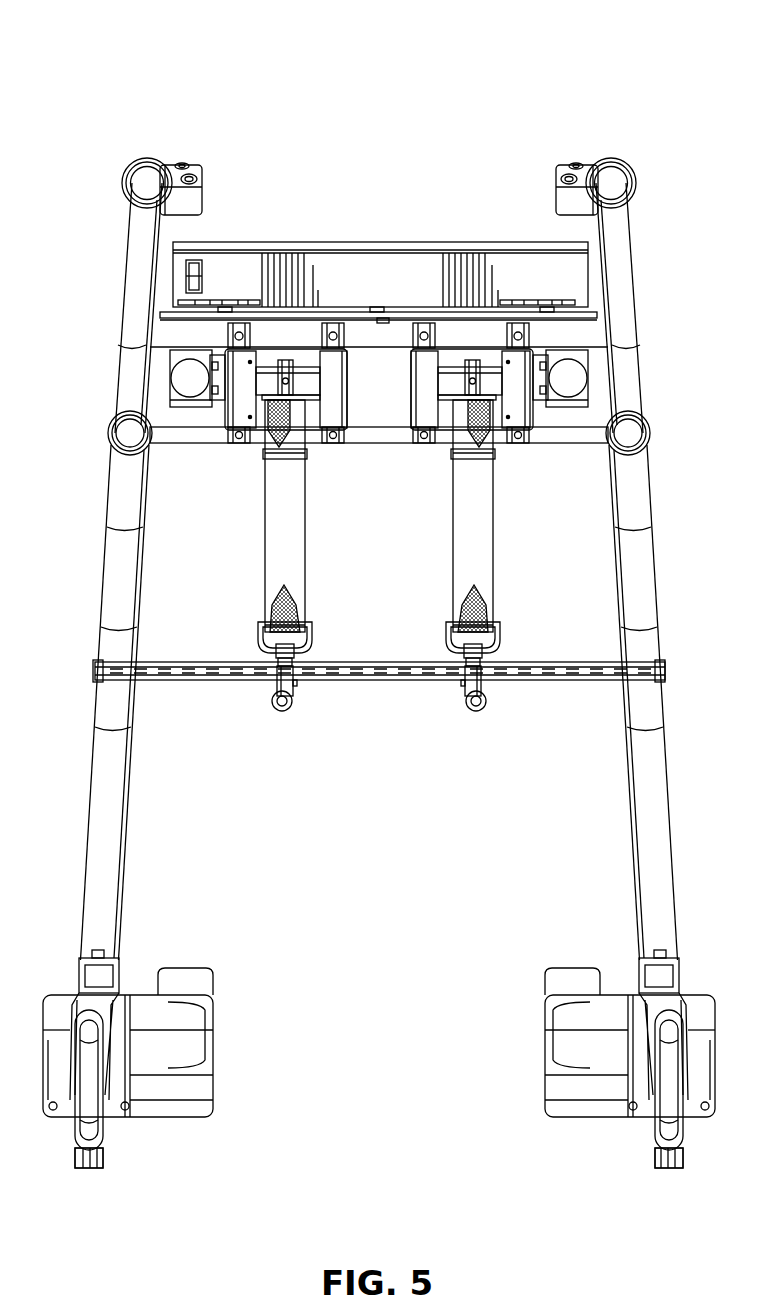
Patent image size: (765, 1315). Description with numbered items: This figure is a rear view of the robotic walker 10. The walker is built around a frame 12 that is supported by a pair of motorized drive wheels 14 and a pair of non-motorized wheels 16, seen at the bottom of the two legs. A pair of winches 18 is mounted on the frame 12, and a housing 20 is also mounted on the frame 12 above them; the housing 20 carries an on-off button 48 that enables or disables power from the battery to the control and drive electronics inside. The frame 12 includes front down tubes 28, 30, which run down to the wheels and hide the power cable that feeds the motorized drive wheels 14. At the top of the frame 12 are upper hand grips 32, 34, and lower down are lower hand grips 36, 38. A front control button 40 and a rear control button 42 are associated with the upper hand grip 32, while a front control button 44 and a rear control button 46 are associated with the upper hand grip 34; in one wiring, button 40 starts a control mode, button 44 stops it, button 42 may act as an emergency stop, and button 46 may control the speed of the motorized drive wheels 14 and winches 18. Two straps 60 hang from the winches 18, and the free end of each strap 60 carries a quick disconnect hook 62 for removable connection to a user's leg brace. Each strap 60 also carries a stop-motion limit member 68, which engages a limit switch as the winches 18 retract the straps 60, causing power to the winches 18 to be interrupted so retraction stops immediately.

The robotic walker 10 is at (550, 72).
The frame 12 is at (633, 362).
The motorized drive wheels 14 is at (90, 1170).
The non-motorized wheels 16 is at (78, 1118).
The winches 18 is at (258, 420).
The housing 20 is at (350, 242).
The front down tube 28 is at (622, 578).
The front down tube 30 is at (110, 608).
The upper hand grip 32 is at (611, 158).
The upper hand grip 34 is at (147, 158).
The lower hand grip 36 is at (650, 431).
The lower hand grip 38 is at (108, 433).
The front control button 40 is at (576, 163).
The rear control button 42 is at (560, 179).
The front control button 44 is at (182, 163).
The rear control button 46 is at (198, 179).
The on-off button 48 is at (204, 271).
The straps 60 is at (300, 548).
The quick disconnect hook 62 is at (292, 700).
The stop-motion limit member 68 is at (307, 453).